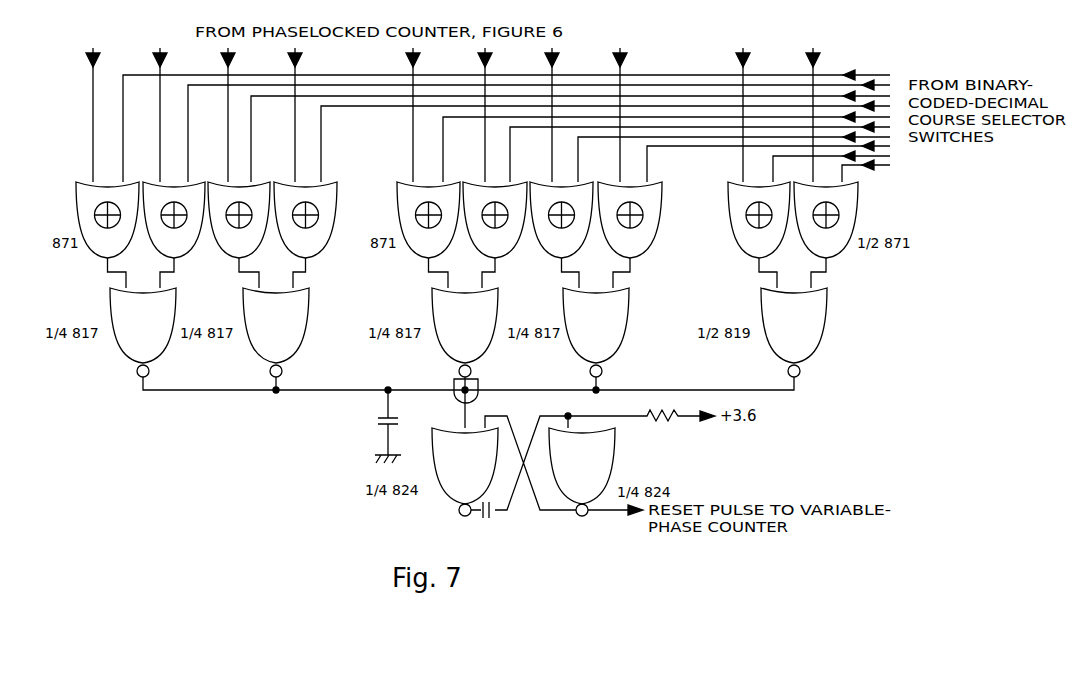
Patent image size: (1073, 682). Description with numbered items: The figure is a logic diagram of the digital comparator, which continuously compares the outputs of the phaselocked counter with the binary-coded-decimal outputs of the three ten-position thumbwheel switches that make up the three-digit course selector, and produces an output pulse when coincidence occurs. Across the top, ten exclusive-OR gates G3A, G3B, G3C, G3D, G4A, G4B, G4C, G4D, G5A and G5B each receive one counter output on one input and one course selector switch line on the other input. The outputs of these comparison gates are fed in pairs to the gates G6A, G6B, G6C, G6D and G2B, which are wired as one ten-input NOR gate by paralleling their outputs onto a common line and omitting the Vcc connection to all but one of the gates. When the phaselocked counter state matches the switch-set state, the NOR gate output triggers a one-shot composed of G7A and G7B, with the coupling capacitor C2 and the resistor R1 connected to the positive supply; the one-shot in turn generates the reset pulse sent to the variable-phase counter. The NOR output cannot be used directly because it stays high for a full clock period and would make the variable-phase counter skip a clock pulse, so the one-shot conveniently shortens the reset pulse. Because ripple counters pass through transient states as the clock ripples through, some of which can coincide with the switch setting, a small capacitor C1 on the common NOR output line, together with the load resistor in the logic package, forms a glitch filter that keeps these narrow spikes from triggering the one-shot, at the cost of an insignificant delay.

The exclusive-OR gate G3A is at (107, 220).
The exclusive-OR gate G3B is at (174, 220).
The exclusive-OR gate G3C is at (239, 220).
The exclusive-OR gate G3D is at (305, 220).
The exclusive-OR gate G4A is at (428, 220).
The exclusive-OR gate G4B is at (495, 220).
The exclusive-OR gate G4C is at (561, 220).
The exclusive-OR gate G4D is at (630, 220).
The exclusive-OR gate G5A is at (759, 220).
The exclusive-OR gate G5B is at (826, 220).
The gate G6A is at (143, 332).
The gate G6B is at (276, 332).
The gate G6C is at (465, 332).
The gate G6D is at (596, 332).
The gate G2B is at (794, 332).
The one-shot gate G7A is at (465, 472).
The one-shot gate G7B is at (582, 472).
The capacitor C1 is at (359, 434).
The capacitor C2 is at (501, 531).
The resistor R1 is at (641, 437).